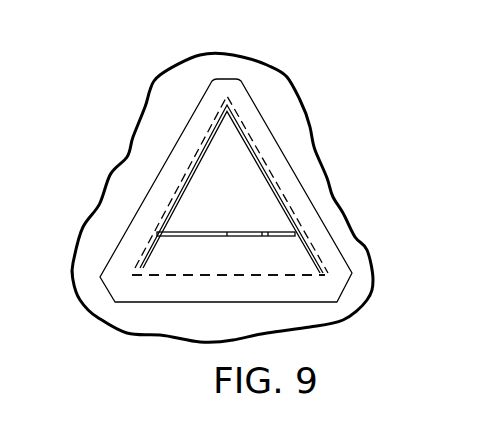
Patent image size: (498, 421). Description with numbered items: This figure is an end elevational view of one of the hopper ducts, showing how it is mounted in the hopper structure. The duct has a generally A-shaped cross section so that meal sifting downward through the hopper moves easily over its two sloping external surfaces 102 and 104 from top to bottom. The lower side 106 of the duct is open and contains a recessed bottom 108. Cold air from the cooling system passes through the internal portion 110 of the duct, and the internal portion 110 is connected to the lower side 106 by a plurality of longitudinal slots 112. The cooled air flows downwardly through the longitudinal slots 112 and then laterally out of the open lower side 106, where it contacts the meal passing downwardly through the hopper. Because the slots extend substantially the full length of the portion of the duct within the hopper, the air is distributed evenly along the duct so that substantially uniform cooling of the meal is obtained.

The external surface 102 is at (170, 213).
The external surface 104 is at (290, 220).
The lower side 106 is at (213, 277).
The recessed bottom 108 is at (236, 232).
The internal portion 110 is at (260, 188).
The longitudinal slots 112 is at (268, 236).